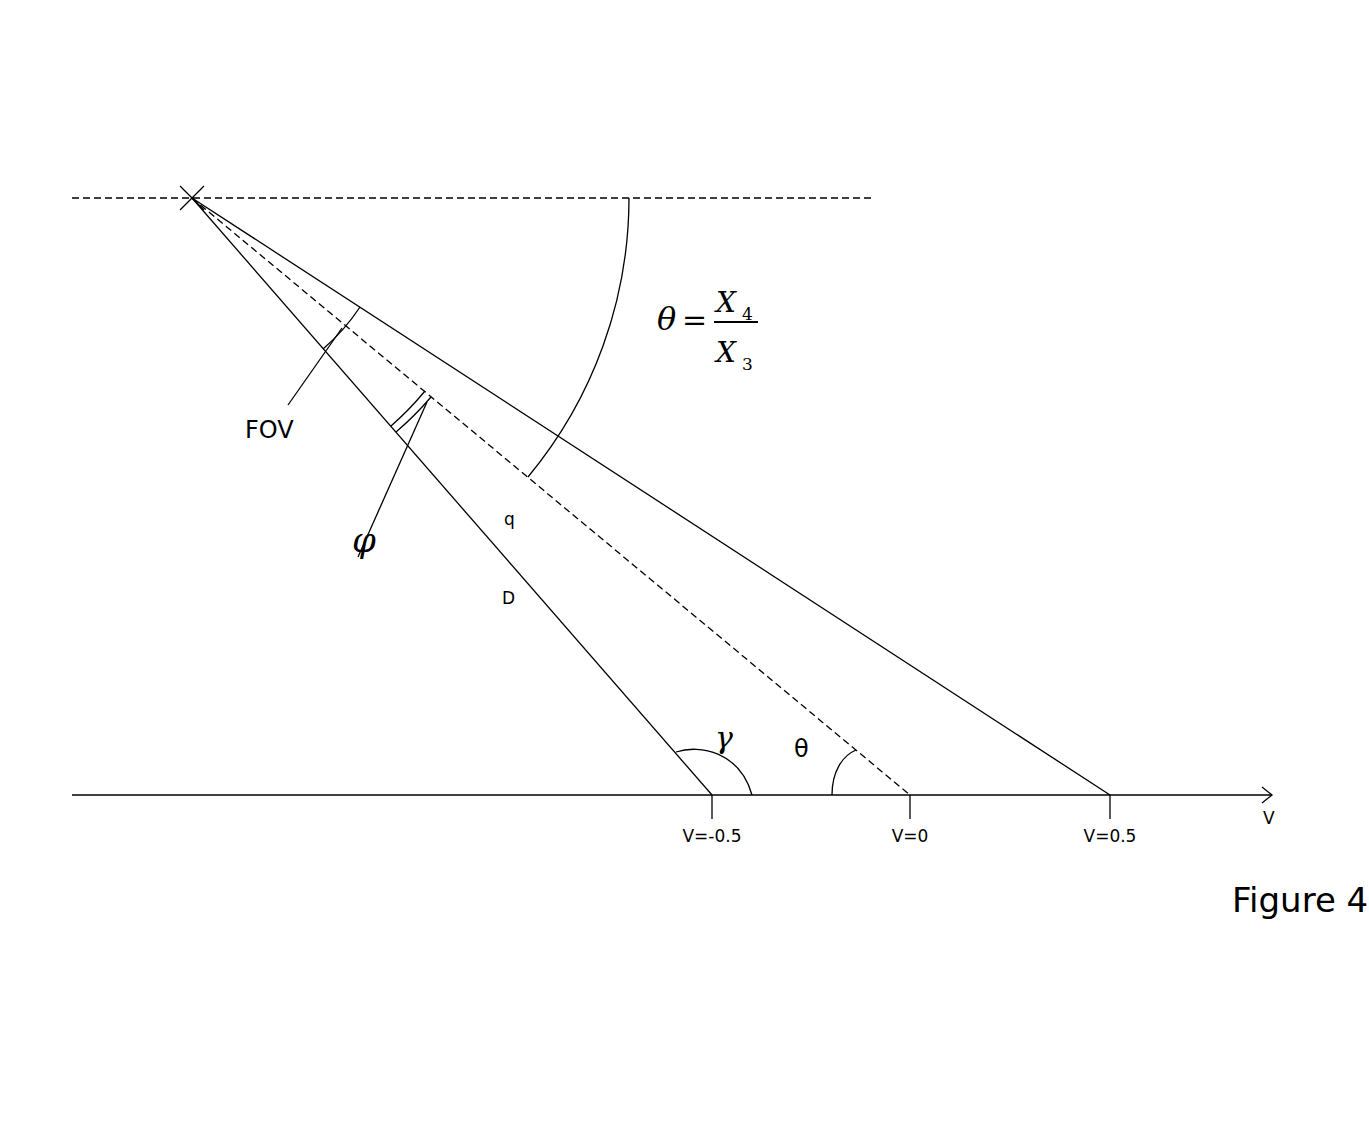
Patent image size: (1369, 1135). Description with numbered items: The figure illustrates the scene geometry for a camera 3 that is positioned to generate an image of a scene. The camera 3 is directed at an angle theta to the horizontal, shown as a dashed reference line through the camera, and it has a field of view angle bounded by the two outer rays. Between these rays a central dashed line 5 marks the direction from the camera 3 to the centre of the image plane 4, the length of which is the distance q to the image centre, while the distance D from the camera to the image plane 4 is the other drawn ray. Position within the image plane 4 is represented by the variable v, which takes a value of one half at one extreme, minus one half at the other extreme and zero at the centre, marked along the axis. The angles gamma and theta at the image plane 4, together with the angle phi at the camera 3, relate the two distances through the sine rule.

The camera 3 is at (200, 190).
The image plane 4 is at (378, 795).
The optical axis center line 5 is at (632, 563).